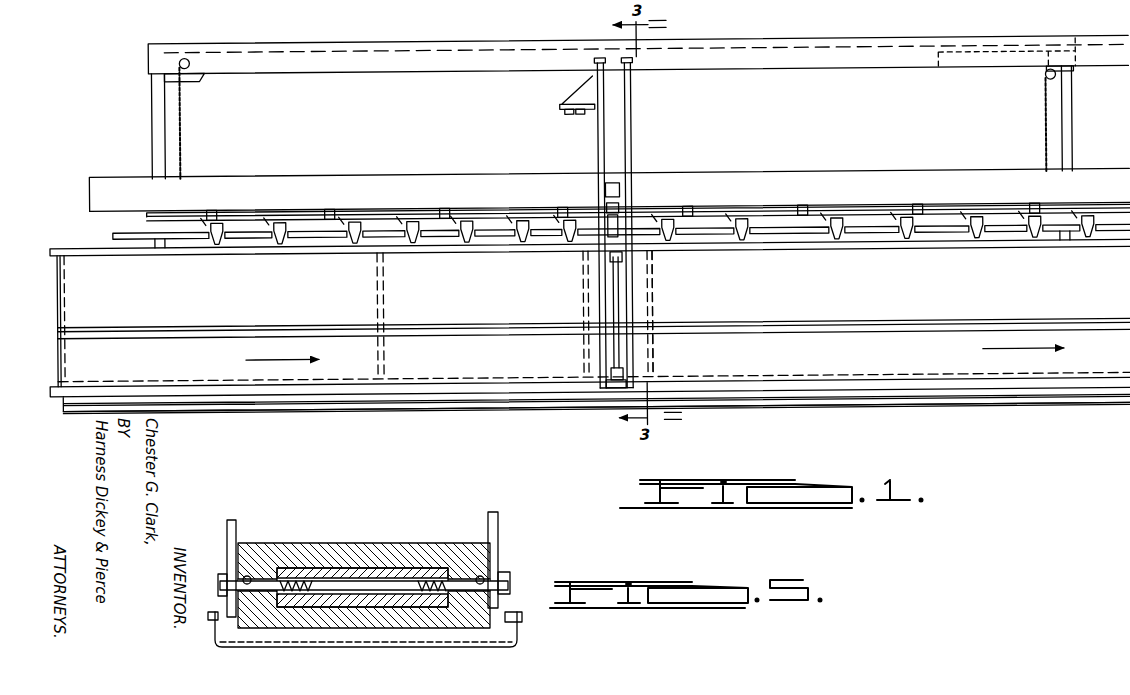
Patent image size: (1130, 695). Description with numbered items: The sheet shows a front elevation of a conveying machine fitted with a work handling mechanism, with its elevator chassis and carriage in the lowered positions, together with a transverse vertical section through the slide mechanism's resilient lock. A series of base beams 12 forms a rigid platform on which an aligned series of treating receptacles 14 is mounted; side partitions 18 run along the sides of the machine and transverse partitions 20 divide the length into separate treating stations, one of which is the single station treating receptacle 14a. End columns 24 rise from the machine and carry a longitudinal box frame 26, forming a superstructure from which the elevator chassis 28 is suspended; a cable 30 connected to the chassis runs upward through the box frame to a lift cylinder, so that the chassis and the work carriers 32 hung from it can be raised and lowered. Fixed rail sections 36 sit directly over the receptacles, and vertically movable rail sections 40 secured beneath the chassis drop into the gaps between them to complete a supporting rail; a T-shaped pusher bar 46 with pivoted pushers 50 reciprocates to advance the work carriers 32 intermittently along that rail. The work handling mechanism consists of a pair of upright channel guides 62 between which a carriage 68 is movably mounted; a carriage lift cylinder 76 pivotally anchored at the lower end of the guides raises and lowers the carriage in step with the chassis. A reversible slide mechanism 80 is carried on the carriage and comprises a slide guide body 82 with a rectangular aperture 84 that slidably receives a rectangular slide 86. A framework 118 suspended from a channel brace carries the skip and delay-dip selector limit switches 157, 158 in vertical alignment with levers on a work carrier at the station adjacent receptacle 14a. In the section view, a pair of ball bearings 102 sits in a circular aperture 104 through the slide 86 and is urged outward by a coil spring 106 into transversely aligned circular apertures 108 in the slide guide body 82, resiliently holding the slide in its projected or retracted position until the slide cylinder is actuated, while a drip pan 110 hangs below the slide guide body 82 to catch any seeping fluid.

In FIG. 1, the base beams 12 is at (288, 409).
In FIG. 1, the treating receptacles 14 is at (472, 395).
In FIG. 1, the single station treating receptacle 14a is at (650, 349).
In FIG. 1, the side partitions 18 is at (304, 313).
In FIG. 1, the transverse partitions 20 is at (384, 352).
In FIG. 1, the end columns 24 is at (150, 112).
In FIG. 1, the longitudinal box frame 26 is at (735, 42).
In FIG. 1, the elevator chassis 28 is at (732, 172).
In FIG. 1, the cable 30 is at (184, 140).
In FIG. 1, the work carriers 32 is at (346, 212).
In FIG. 1, the fixed rail sections 36 is at (250, 240).
In FIG. 1, the vertically movable rail sections 40 is at (400, 236).
In FIG. 1, the pusher bar 46 is at (494, 210).
In FIG. 1, the pushers 50 is at (424, 210).
In FIG. 1, the channel guides 62 is at (606, 136).
In FIG. 1, the carriage 68 is at (622, 190).
In FIG. 1, the carriage lift cylinder 76 is at (619, 310).
In FIG. 1, the reversible slide mechanism 80 is at (619, 211).
In FIG. 1, the framework 118 is at (558, 93).
In FIG. 1, the limit switch 157 is at (568, 112).
In FIG. 1, the limit switch 158 is at (582, 114).
In FIG. 5, the slide guide body 82 is at (290, 545).
In FIG. 5, the rectangular aperture 84 is at (322, 580).
In FIG. 5, the slide 86 is at (368, 568).
In FIG. 5, the ball bearings 102 is at (256, 576).
In FIG. 5, the circular aperture 104 is at (390, 580).
In FIG. 5, the coil spring 106 is at (428, 580).
In FIG. 5, the circular apertures 108 is at (246, 545).
In FIG. 5, the drip pan 110 is at (395, 647).